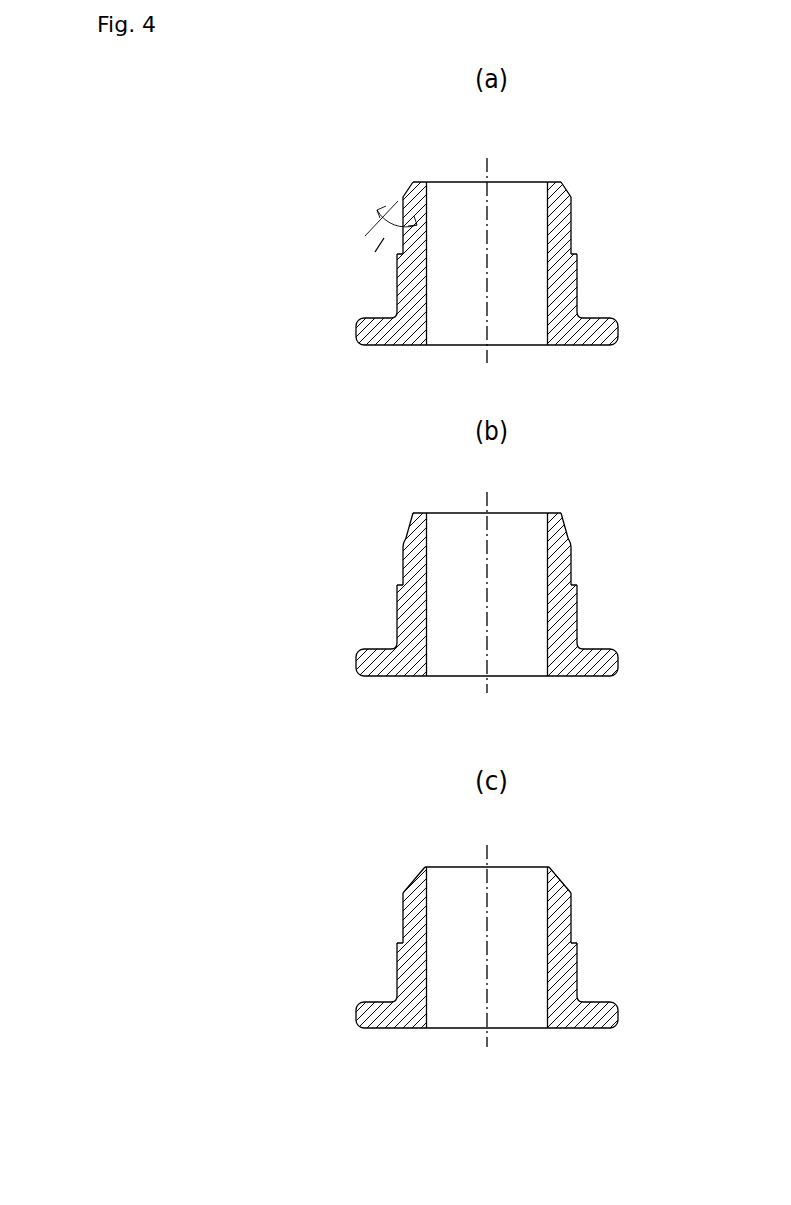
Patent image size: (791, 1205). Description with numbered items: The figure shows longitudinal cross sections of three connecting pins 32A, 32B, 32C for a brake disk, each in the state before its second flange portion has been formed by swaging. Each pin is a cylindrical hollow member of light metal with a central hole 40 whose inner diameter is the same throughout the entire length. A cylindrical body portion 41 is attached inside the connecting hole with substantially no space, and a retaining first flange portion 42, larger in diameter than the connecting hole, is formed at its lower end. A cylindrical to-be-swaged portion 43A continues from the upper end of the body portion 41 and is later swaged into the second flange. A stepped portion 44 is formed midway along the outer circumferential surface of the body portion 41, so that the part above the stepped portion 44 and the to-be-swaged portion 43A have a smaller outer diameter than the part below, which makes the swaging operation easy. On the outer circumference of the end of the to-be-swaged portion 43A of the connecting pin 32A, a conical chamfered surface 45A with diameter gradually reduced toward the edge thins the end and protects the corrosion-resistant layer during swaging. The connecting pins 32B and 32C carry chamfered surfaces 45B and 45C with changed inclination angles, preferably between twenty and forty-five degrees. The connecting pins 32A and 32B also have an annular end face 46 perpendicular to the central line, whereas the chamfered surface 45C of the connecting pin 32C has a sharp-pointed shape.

The connecting pin 32A is at (566, 181).
The connecting pin 32B is at (566, 513).
The connecting pin 32C is at (566, 866).
The central hole 40 is at (428, 312).
The body portion 41 is at (578, 283).
The first flange portion 42 is at (598, 339).
The to-be-swaged portion 43A is at (572, 200).
The stepped portion 44 is at (572, 250).
The chamfered surface 45A is at (411, 185).
The chamfered surface 45B is at (408, 530).
The chamfered surface 45C is at (412, 880).
The annular end face 46 is at (422, 183).